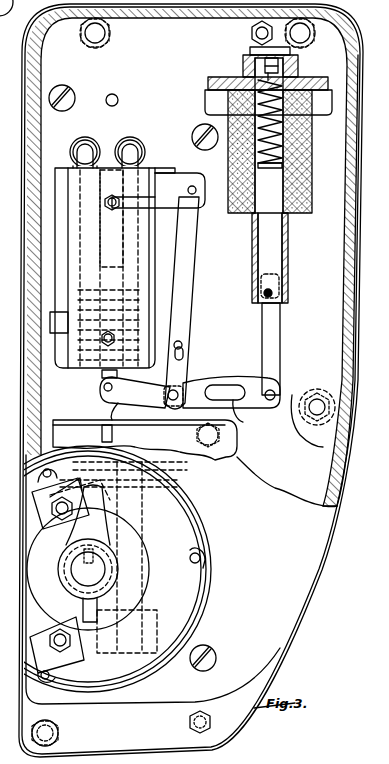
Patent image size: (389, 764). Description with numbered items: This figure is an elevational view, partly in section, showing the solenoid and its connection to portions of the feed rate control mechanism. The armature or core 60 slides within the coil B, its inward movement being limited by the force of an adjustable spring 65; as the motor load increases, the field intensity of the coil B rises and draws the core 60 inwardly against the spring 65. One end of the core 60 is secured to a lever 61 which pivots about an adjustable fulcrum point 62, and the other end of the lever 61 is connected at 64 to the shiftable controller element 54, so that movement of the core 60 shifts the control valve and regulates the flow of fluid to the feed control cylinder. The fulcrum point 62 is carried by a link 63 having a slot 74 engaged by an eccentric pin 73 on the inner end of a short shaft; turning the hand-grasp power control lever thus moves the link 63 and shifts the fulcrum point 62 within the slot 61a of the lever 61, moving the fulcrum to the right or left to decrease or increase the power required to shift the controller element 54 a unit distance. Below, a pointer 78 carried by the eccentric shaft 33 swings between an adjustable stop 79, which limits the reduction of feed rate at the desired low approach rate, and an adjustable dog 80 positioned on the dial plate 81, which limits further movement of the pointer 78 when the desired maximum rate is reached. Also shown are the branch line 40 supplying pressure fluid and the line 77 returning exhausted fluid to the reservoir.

The branch line 40 is at (86, 150).
The line 77 is at (132, 152).
The adjustable spring 65 is at (282, 131).
The armature or core 60 is at (273, 255).
The link 63 is at (188, 285).
The pin 73 is at (183, 343).
The slot 74 is at (183, 355).
The fulcrum point 62 is at (178, 390).
The lever 61 is at (222, 376).
The slot 61a is at (249, 415).
The connection point 64 is at (103, 387).
The shiftable controller element 54 is at (108, 422).
The adjustable dog 80 is at (55, 523).
The pointer 78 is at (80, 534).
The eccentric shaft 33 is at (80, 574).
The adjustable stop 79 is at (58, 625).
The dial plate 81 is at (197, 578).
The coil B is at (320, 186).